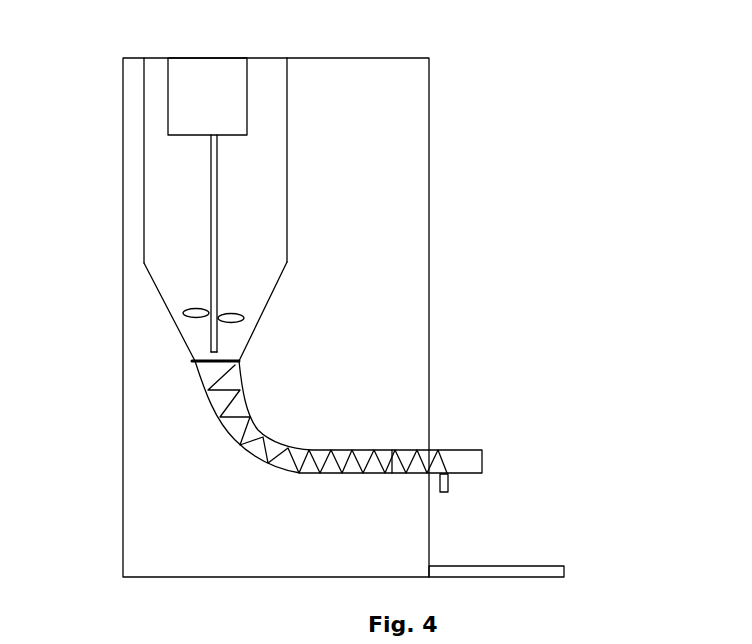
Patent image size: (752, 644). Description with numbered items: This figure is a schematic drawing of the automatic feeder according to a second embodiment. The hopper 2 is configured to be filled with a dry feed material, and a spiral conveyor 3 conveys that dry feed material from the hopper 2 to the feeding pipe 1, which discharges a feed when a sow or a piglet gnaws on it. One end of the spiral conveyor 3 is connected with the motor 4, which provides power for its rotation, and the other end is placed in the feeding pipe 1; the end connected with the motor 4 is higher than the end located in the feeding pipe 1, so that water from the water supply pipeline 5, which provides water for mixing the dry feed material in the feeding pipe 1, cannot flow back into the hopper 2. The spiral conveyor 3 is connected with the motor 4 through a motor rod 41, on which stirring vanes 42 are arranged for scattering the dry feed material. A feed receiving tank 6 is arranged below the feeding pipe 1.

The feeding pipe 1 is at (381, 417).
The hopper 2 is at (231, 317).
The spiral conveyor 3 is at (300, 462).
The motor 4 is at (243, 77).
The motor rod 41 is at (215, 163).
The stirring vanes 42 is at (183, 313).
The water supply pipeline 5 is at (498, 495).
The feed receiving tank 6 is at (555, 529).